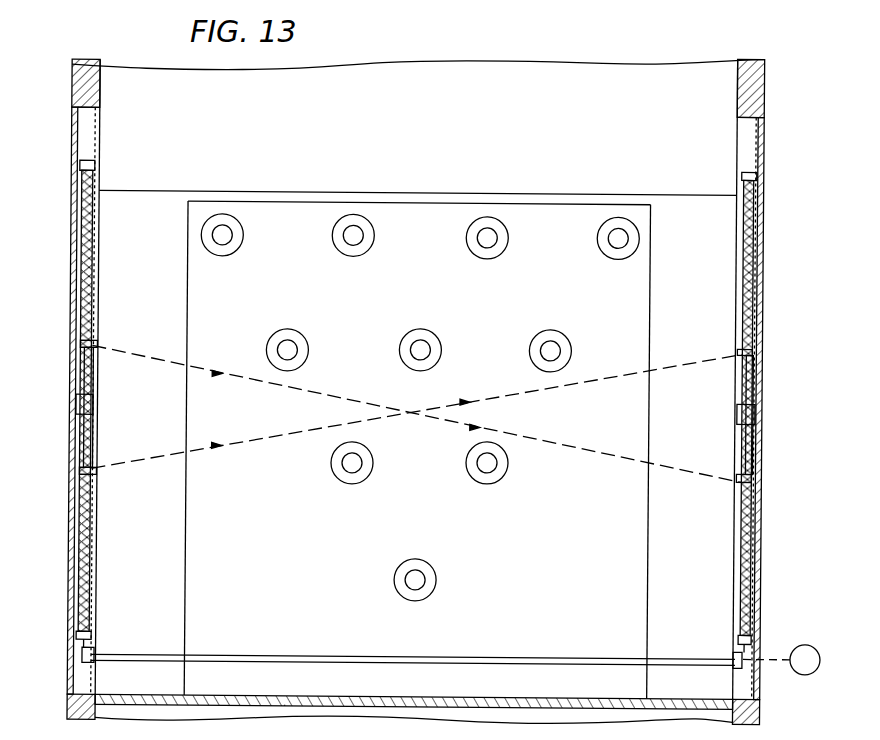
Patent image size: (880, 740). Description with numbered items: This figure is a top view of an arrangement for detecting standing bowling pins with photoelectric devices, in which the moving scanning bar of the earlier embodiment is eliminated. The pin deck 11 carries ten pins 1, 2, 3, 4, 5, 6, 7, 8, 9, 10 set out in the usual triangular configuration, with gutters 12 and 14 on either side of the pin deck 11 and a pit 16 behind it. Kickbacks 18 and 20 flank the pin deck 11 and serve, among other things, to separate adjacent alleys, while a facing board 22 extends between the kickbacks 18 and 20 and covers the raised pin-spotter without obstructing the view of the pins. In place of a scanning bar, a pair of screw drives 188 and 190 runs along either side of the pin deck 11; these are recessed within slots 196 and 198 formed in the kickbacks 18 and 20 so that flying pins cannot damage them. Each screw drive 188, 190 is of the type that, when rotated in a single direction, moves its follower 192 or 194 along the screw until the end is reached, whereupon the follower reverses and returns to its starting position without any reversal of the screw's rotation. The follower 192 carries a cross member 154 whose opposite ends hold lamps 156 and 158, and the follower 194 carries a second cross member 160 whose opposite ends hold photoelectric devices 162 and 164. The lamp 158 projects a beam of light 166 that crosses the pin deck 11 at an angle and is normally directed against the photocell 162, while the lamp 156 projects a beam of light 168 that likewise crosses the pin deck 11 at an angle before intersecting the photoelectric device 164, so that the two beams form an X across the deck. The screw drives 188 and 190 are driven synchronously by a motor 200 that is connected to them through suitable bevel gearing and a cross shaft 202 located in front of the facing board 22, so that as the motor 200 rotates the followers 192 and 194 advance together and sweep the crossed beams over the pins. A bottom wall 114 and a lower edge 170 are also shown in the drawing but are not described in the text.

The pin 1 is at (394, 580).
The pin 2 is at (335, 477).
The pin 3 is at (473, 477).
The pin 4 is at (265, 350).
The pin 5 is at (398, 350).
The pin 6 is at (528, 351).
The pin 7 is at (227, 258).
The pin 8 is at (353, 258).
The pin 9 is at (486, 259).
The pin 10 is at (619, 260).
The pin deck 11 is at (322, 212).
The gutter 12 is at (170, 526).
The gutter 14 is at (660, 521).
The pit 16 is at (399, 135).
The kickback 18 is at (66, 703).
The kickback 20 is at (763, 704).
The facing board 22 is at (288, 706).
The bottom wall / floor plate 114 is at (494, 739).
The cross member 154 is at (90, 442).
The lamp 156 is at (92, 346).
The lamp 158 is at (95, 480).
The second cross member 160 is at (748, 392).
The photoelectric device 162 is at (740, 348).
The photoelectric device 164 is at (740, 481).
The beam of light 166 is at (372, 420).
The beam of light 168 is at (330, 397).
The lower edge of base 170 is at (655, 739).
The screw drive 188 is at (88, 577).
The screw drive 190 is at (744, 578).
The follower 192 is at (97, 408).
The follower 194 is at (737, 416).
The slot 196 is at (82, 152).
The slot 198 is at (747, 150).
The motor 200 is at (808, 645).
The cross shaft 202 is at (423, 656).